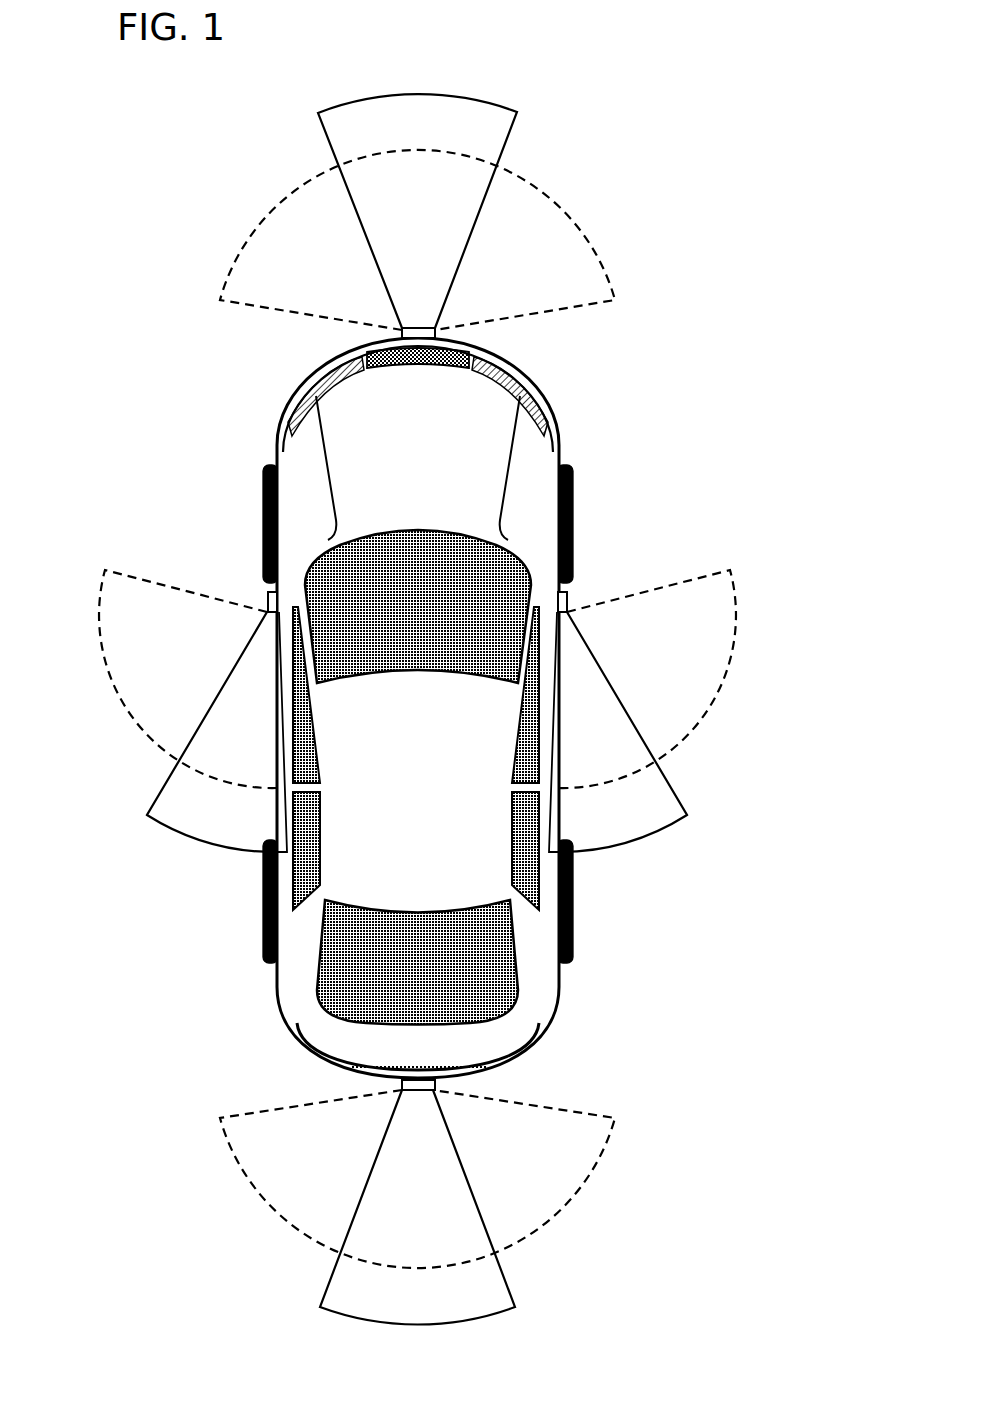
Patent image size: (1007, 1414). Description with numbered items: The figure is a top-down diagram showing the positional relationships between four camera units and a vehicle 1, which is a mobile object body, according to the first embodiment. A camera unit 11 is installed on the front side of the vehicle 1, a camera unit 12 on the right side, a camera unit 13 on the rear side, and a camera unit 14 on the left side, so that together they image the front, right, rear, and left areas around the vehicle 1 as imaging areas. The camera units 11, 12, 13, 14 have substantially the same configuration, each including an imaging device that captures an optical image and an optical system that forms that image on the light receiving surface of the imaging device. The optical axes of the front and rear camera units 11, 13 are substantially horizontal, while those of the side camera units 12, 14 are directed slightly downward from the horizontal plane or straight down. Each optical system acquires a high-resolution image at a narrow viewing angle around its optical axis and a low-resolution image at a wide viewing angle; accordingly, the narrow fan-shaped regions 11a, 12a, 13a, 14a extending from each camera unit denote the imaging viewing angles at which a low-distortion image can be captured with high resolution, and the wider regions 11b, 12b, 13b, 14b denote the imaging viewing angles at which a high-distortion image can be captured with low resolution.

The vehicle 1 is at (559, 450).
The camera unit 11 is at (424, 334).
The imaging viewing angle 11a is at (508, 125).
The imaging viewing angle 11b is at (584, 304).
The camera unit 12 is at (567, 592).
The imaging viewing angle 12a is at (672, 790).
The imaging viewing angle 12b is at (735, 623).
The camera unit 13 is at (424, 1088).
The imaging viewing angle 13a is at (510, 1280).
The imaging viewing angle 13b is at (583, 1113).
The camera unit 14 is at (268, 592).
The imaging viewing angle 14a is at (162, 790).
The imaging viewing angle 14b is at (100, 623).